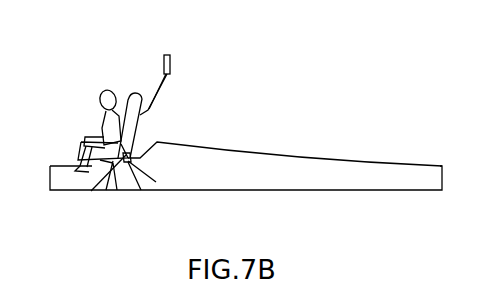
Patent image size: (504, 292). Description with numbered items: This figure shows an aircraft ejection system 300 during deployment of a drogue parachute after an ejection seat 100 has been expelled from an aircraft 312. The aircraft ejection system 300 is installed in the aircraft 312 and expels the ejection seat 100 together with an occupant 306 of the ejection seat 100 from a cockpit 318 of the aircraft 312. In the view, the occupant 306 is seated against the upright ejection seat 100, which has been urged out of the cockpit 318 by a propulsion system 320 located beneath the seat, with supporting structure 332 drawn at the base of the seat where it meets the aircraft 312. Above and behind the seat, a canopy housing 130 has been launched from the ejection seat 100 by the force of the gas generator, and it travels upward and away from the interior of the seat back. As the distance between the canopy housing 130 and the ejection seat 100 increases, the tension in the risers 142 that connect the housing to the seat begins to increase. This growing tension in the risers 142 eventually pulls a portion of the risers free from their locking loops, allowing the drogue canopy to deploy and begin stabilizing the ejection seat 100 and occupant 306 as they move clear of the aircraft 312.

The ejection seat 100 is at (135, 92).
The canopy housing 130 is at (170, 65).
The risers 142 is at (148, 110).
The aircraft ejection system 300 is at (308, 121).
The occupant 306 is at (101, 97).
The aircraft 312 is at (231, 181).
The cockpit 318 is at (62, 152).
The propulsion system 320 is at (92, 187).
The struts 332 is at (120, 188).